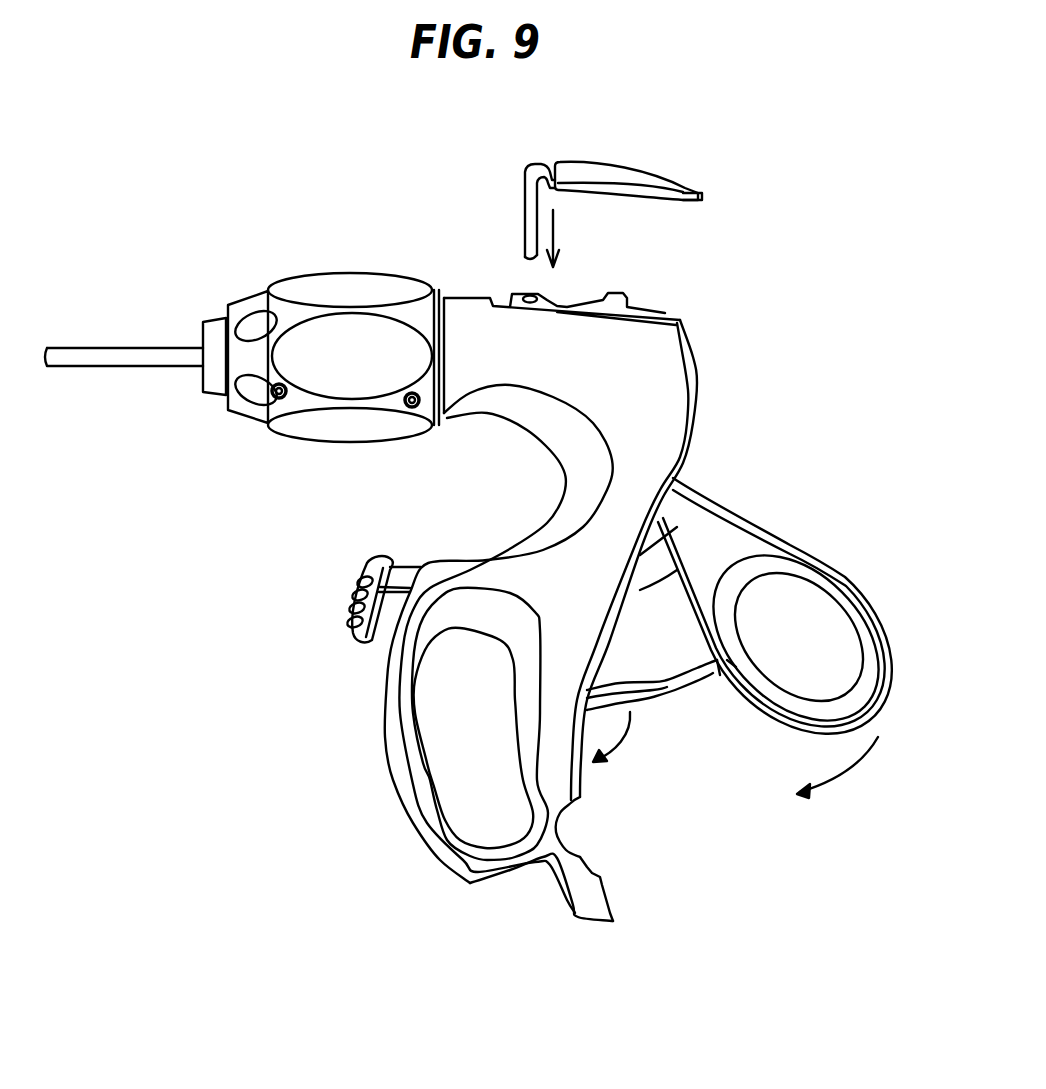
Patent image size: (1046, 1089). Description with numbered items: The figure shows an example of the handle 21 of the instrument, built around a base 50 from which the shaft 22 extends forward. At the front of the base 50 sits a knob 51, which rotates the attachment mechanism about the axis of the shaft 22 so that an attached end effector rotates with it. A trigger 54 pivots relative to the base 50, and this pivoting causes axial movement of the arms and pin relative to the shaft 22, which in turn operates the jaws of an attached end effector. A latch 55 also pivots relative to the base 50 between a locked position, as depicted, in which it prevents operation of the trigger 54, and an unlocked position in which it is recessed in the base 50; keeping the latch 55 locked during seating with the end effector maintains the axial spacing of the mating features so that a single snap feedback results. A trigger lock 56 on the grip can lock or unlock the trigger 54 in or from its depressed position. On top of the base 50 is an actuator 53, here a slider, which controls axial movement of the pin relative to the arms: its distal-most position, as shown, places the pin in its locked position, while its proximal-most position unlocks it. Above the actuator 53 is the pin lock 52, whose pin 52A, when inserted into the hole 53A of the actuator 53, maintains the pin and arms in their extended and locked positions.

The handle 21 is at (851, 183).
The shaft 22 is at (113, 345).
The base 50 is at (700, 388).
The knob 51 is at (338, 270).
The pin lock 52 is at (604, 165).
The pin 52A is at (525, 208).
The actuator 53 is at (627, 294).
The hole 53A is at (527, 296).
The trigger 54 is at (857, 587).
The latch 55 is at (657, 697).
The trigger lock 56 is at (362, 563).